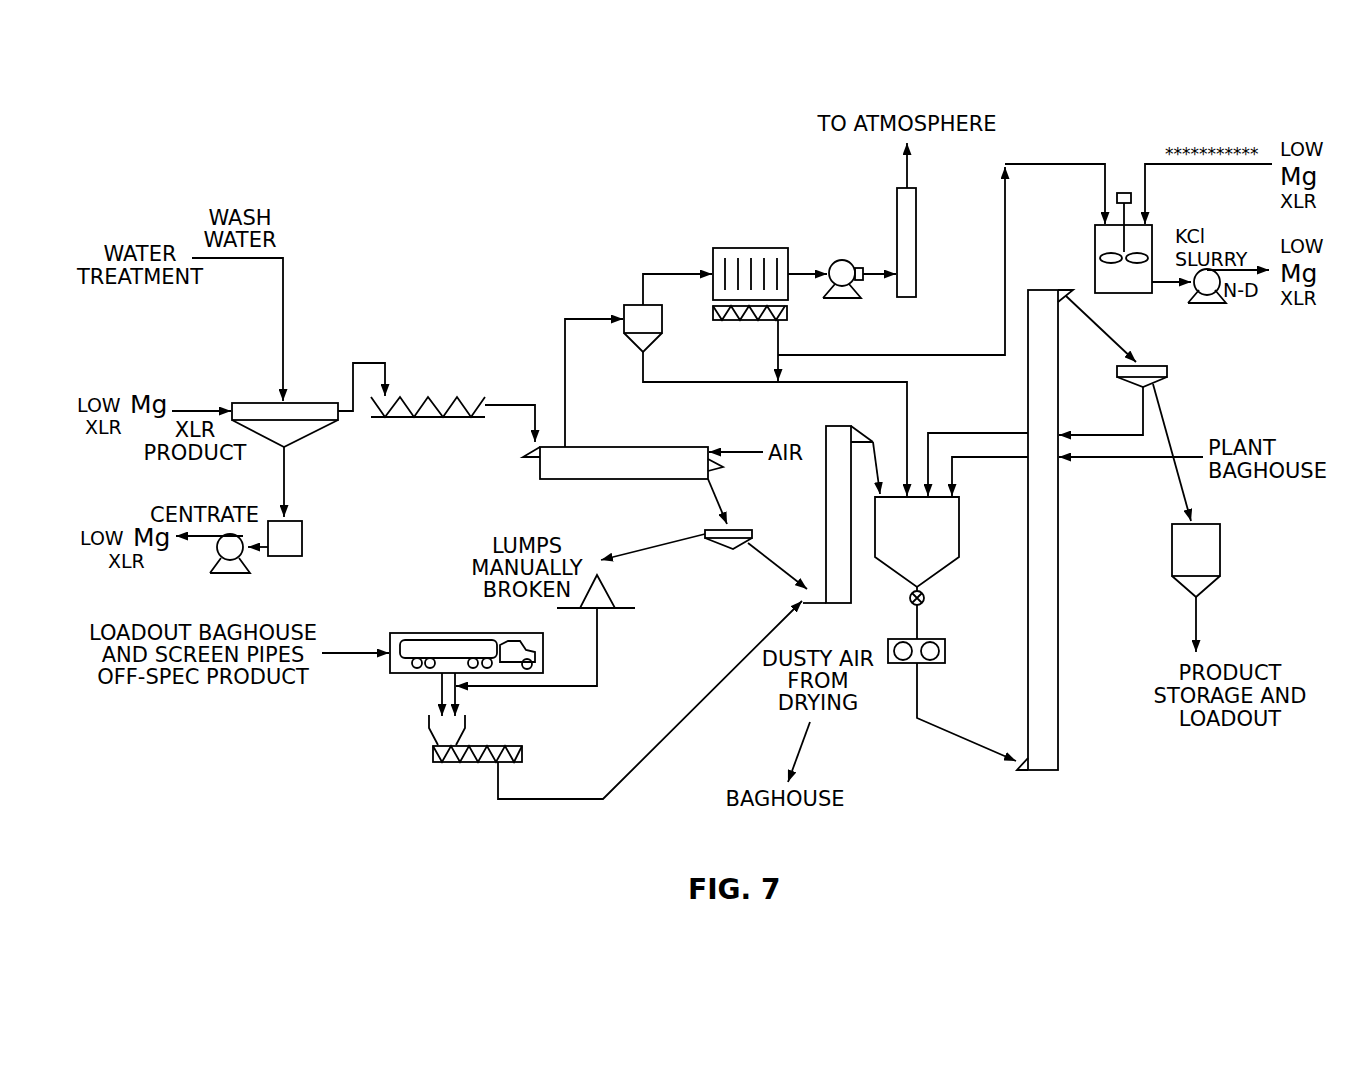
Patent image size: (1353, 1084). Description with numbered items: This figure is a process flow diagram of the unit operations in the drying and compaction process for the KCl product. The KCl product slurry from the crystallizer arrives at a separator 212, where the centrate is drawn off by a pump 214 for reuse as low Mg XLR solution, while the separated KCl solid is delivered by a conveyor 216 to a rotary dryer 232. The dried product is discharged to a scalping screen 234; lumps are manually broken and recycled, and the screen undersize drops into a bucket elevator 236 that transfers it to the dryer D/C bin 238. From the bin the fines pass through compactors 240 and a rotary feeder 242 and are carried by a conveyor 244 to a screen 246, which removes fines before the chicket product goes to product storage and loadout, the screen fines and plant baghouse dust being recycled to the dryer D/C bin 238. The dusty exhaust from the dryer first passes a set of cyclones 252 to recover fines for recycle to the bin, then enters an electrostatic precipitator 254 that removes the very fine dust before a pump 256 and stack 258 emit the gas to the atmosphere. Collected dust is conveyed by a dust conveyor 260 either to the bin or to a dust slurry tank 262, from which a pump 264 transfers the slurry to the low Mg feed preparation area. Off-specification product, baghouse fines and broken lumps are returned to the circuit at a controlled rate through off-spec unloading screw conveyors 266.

The separator 212 is at (302, 412).
The pump 214 is at (230, 575).
The conveyor 216 is at (430, 394).
The rotary dryer 232 is at (653, 458).
The scalping screen 234 is at (718, 533).
The bucket elevator 236 is at (835, 565).
The dryer D/C bin 238 is at (917, 542).
The compactors 240 is at (925, 597).
The rotary feeder 242 is at (935, 665).
The conveyor 244 is at (1048, 735).
The product screen 246 is at (1158, 370).
The cyclones 252 is at (628, 305).
The electrostatic precipitator 254 is at (716, 257).
The pump 256 is at (840, 262).
The stack 258 is at (908, 211).
The dust conveyor 260 is at (781, 312).
The dust slurry tank 262 is at (1105, 240).
The pump 264 is at (1214, 292).
The off-spec unloading screw conveyors 266 is at (433, 752).